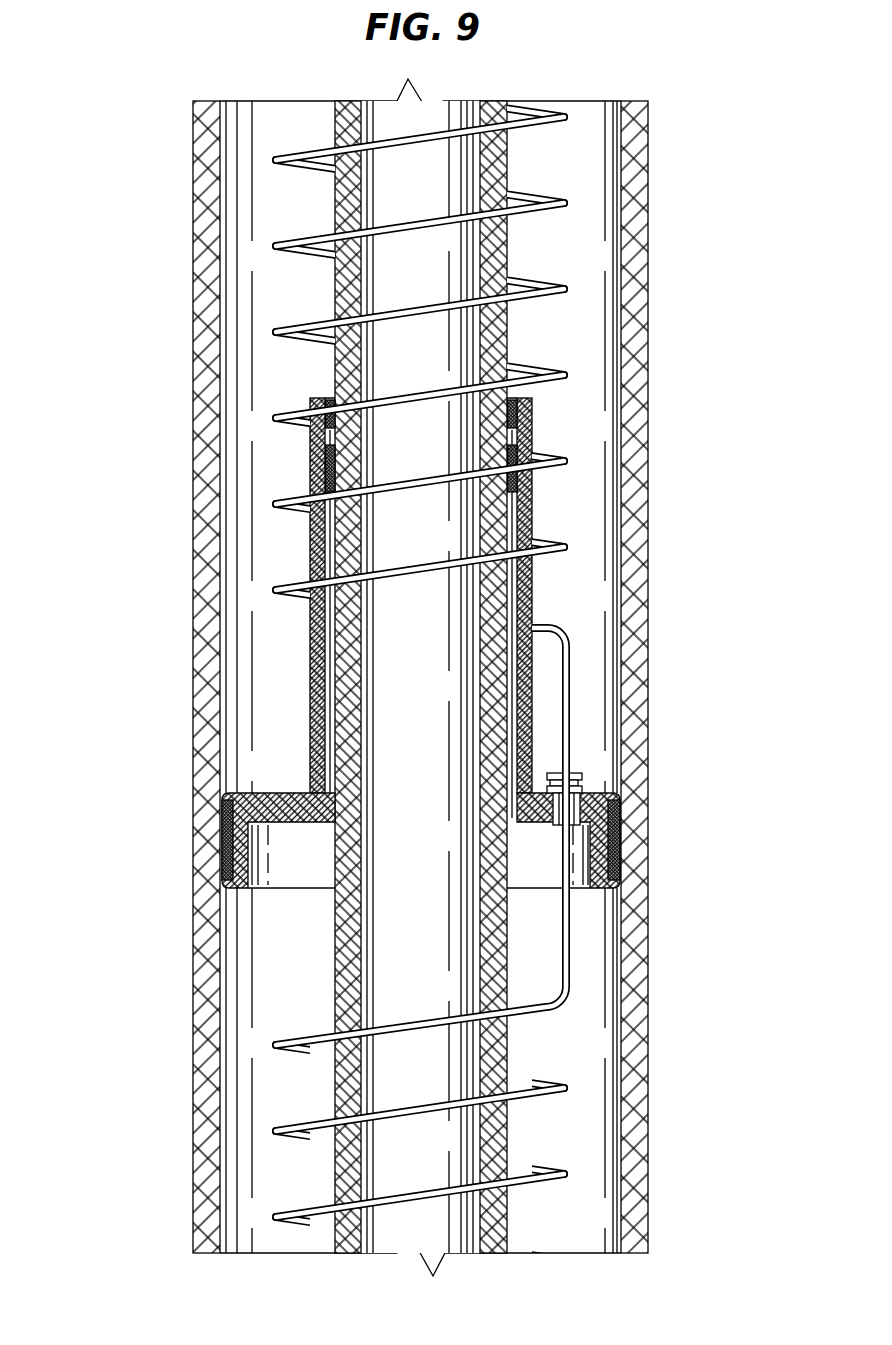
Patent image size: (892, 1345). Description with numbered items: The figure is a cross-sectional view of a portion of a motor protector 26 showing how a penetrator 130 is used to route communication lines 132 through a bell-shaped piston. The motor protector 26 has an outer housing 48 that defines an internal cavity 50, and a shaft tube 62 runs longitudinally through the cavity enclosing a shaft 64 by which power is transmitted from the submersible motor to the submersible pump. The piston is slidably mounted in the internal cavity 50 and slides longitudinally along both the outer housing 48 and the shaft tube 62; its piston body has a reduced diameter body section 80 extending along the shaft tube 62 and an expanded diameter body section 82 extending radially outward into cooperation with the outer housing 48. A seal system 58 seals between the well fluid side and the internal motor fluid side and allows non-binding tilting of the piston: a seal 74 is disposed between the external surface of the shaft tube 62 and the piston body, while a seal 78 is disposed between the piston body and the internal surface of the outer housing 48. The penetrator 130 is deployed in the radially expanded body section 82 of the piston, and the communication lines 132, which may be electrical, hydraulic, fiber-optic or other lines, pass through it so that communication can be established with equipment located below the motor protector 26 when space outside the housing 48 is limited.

The motor protector 26 is at (690, 343).
The outer housing 48 is at (192, 1127).
The internal cavity 50 is at (585, 158).
The seal system 58 is at (297, 475).
The shaft tube 62 is at (508, 1128).
The shaft 64 is at (390, 957).
The seal 74 is at (297, 441).
The seal 78 is at (195, 880).
The reduced diameter body section 80 is at (310, 667).
The expanded diameter body section 82 is at (600, 883).
The penetrator 130 is at (582, 773).
The communication lines 132 is at (537, 213).